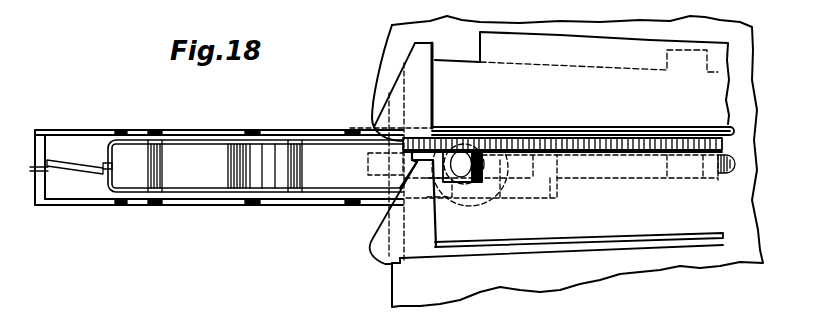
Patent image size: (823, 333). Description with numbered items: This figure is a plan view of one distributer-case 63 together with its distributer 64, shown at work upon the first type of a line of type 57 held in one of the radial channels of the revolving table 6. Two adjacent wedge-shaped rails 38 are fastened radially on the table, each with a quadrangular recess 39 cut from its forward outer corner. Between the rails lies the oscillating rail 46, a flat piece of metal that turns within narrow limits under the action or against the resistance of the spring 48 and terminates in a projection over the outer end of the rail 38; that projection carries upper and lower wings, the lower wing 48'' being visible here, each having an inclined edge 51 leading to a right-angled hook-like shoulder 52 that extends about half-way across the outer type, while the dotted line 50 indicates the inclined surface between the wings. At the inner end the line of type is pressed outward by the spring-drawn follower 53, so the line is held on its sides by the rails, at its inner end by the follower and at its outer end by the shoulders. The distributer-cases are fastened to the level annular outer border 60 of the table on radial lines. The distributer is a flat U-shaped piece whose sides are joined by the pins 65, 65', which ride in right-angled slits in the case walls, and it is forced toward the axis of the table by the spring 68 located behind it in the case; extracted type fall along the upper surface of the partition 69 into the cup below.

The revolving table 6 is at (567, 161).
The wedge-shaped rail 38 is at (601, 149).
The quadrangular recess 39 is at (457, 50).
The oscillating rail 46 is at (732, 125).
The spring 48 is at (422, 55).
The lower wing 48'' is at (461, 180).
The dotted line indicating inclined surface 50 is at (389, 91).
The inclined edge 51 is at (370, 271).
The hook-like shoulder 52 is at (402, 262).
The follower 53 is at (561, 176).
The line of type 57 is at (722, 143).
The outer border of the table 60 is at (500, 164).
The distributer-case 63 is at (219, 211).
The distributer 64 is at (197, 127).
The pin 65 is at (142, 166).
The pin 65' is at (309, 166).
The spring 68 is at (71, 175).
The partition 69 is at (228, 162).